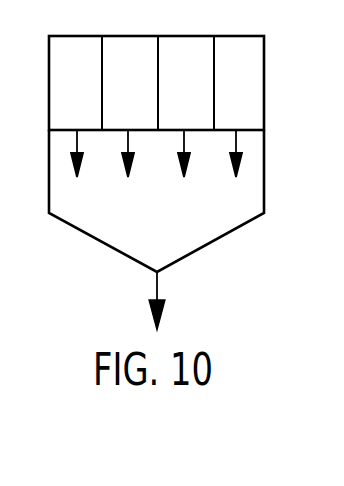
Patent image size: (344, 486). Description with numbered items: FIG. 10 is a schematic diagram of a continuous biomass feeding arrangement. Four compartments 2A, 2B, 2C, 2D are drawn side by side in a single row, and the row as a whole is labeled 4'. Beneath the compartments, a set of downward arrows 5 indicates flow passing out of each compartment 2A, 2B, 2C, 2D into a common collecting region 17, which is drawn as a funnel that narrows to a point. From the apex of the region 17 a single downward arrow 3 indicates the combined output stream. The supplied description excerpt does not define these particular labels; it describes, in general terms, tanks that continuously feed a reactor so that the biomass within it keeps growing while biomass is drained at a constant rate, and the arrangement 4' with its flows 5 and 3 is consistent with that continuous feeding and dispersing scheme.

The source cell 2A is at (75, 83).
The source cell 2B is at (130, 83).
The source cell 2C is at (186, 83).
The source cell 2D is at (239, 83).
The cell array 4' is at (178, 83).
The flow arrows 5 is at (131, 140).
The collecting funnel 17 is at (166, 233).
The output flow 3 is at (158, 284).